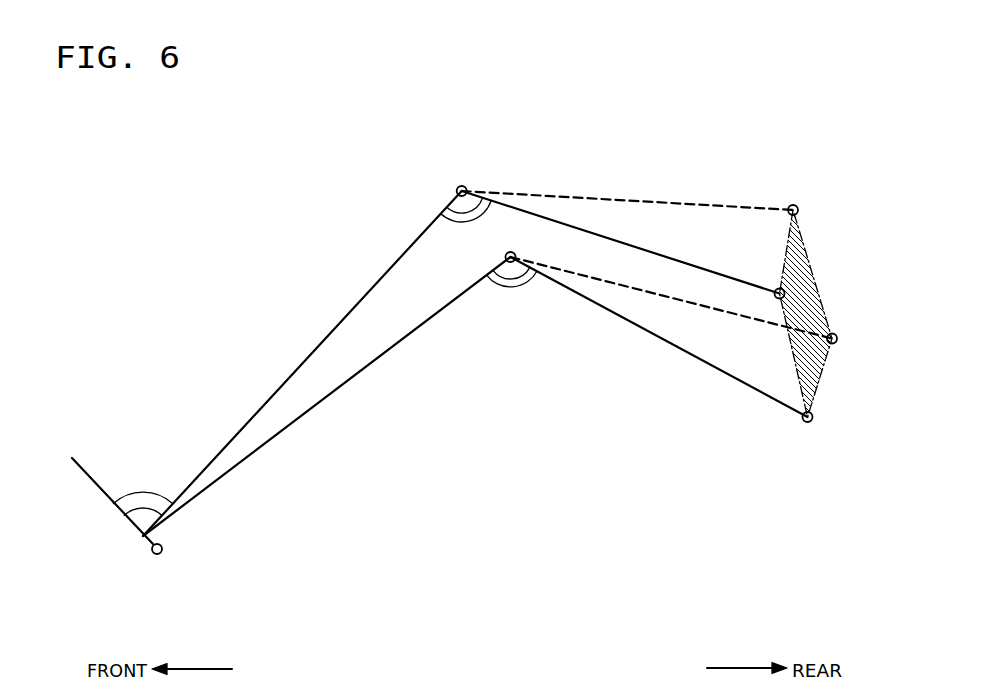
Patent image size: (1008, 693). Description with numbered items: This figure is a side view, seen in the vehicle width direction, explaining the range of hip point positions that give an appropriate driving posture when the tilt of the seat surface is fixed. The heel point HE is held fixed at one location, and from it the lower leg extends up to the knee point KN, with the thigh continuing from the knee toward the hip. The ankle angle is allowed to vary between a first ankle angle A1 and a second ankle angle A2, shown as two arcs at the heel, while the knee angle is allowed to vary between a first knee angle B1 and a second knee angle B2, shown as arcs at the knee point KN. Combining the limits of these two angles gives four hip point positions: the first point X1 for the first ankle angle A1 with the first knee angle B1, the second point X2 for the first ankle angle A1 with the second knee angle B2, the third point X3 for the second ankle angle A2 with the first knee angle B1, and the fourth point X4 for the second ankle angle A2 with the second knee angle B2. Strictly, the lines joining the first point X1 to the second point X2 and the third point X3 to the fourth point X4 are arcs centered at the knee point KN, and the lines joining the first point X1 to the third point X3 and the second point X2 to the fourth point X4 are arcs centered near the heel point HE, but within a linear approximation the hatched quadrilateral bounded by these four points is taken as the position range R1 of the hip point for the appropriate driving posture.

The heel point HE is at (163, 547).
The knee point KN is at (512, 252).
The first ankle angle A1 is at (141, 508).
The second ankle angle A2 is at (148, 492).
The first knee angle B1 is at (462, 213).
The second knee angle B2 is at (440, 217).
The first point X1 is at (776, 289).
The second point X2 is at (793, 204).
The third point X3 is at (808, 422).
The fourth point X4 is at (836, 342).
The position range of the hip point R1 is at (812, 283).